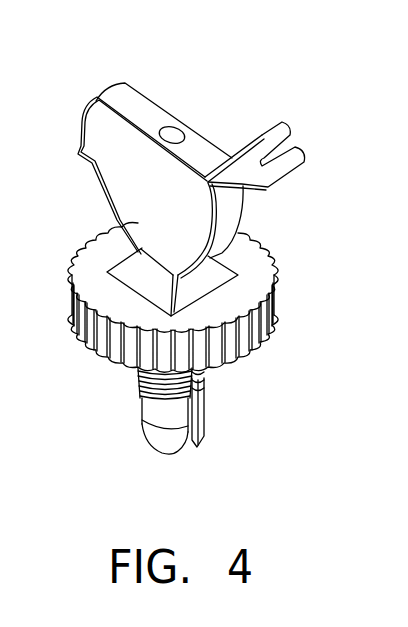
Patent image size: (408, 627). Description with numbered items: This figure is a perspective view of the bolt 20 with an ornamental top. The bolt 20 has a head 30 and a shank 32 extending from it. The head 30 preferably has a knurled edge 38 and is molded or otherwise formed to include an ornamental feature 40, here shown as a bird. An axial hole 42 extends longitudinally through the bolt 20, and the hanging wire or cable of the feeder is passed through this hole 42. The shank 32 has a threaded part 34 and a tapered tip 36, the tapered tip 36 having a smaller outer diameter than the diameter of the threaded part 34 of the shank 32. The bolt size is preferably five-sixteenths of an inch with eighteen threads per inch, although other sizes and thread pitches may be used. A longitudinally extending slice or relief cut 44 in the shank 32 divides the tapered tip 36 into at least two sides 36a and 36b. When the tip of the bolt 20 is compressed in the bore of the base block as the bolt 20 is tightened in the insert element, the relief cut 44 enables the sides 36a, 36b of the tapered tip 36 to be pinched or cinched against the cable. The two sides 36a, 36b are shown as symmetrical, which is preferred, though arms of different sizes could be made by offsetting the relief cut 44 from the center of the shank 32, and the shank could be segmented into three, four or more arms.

The bolt 20 is at (58, 76).
The head 30 is at (254, 243).
The shank 32 is at (240, 386).
The threaded part 34 is at (140, 385).
The tapered tip 36 is at (133, 465).
The side 36a is at (175, 450).
The side 36b is at (198, 434).
The knurled edge 38 is at (275, 305).
The ornamental feature 40 is at (125, 135).
The axial hole 42 is at (174, 132).
The relief cut 44 is at (196, 411).